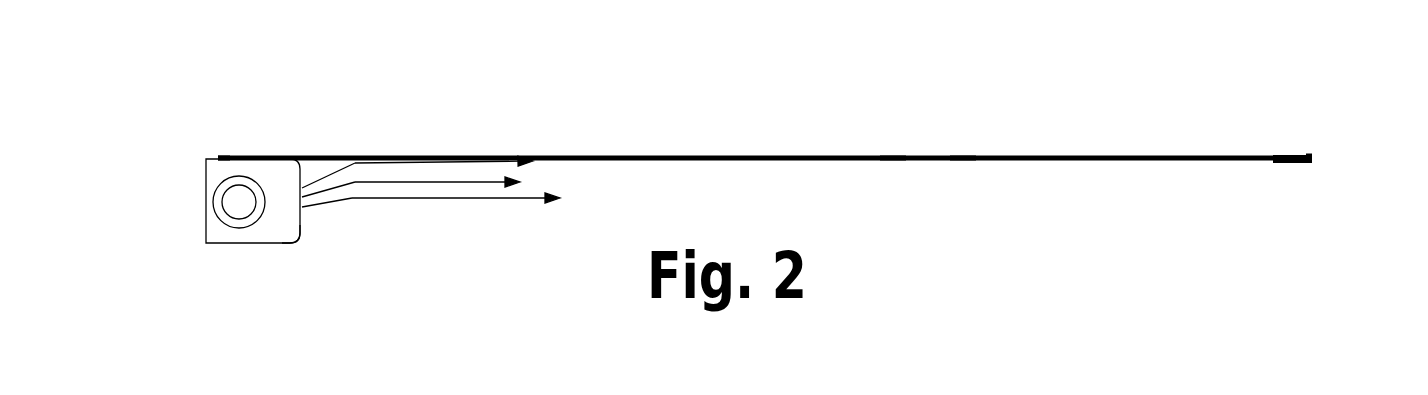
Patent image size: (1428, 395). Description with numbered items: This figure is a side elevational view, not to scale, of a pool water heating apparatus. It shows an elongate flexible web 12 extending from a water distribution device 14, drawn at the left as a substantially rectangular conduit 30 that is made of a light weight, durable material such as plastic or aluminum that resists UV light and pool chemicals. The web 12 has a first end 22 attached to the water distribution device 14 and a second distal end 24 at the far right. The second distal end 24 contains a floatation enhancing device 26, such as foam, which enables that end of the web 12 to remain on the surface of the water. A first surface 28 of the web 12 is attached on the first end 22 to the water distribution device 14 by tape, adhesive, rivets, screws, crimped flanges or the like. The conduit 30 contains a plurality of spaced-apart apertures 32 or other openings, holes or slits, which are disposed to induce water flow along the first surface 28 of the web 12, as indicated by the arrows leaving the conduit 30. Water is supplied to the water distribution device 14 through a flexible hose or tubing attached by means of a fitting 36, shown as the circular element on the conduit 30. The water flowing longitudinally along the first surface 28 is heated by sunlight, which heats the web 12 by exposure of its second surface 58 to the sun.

The elongate flexible web 12 is at (1074, 144).
The water distribution device 14 is at (260, 237).
The first end 22 is at (229, 147).
The second distal end 24 is at (1320, 142).
The floatation enhancing device 26 is at (1291, 178).
The first surface 28 is at (963, 173).
The rectangular conduit 30 is at (294, 258).
The apertures 32 is at (313, 223).
The fitting 36 is at (222, 220).
The second surface 58 is at (893, 143).